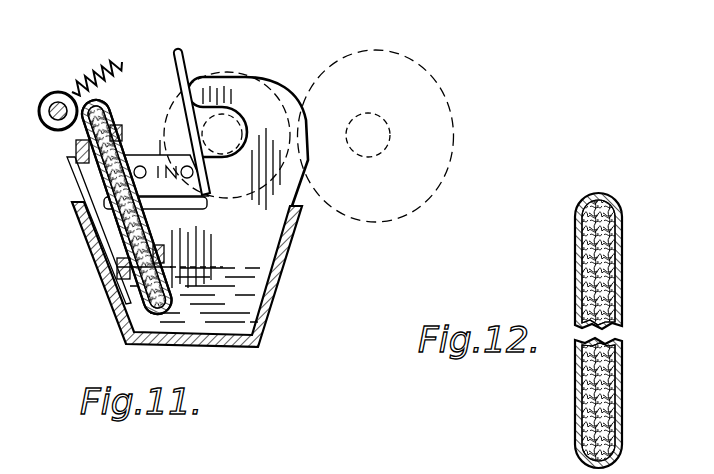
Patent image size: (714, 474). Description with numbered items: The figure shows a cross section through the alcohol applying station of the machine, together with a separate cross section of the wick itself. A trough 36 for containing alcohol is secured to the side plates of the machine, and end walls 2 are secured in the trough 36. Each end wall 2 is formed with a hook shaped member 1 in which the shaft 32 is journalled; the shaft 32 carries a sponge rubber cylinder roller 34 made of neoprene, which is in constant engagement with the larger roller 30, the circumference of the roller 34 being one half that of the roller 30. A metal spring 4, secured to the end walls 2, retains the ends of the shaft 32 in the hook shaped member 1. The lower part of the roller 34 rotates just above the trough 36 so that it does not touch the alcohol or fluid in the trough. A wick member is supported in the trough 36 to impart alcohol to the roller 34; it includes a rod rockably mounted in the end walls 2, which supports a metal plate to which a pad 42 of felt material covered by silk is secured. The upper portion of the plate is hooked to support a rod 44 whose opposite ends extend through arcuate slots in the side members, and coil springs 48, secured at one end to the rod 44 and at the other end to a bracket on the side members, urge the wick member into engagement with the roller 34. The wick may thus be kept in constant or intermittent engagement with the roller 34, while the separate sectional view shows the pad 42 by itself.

In FIG. 11, the hook shaped member 1 is at (214, 76).
In FIG. 11, the end wall 2 is at (257, 228).
In FIG. 11, the metal spring 4 is at (175, 64).
In FIG. 11, the roller 30 is at (366, 222).
In FIG. 11, the shaft 32 is at (266, 88).
In FIG. 11, the sponge rubber cylinder roller 34 is at (242, 113).
In FIG. 11, the trough 36 is at (97, 287).
In FIG. 11, the pad 42 is at (120, 190).
In FIG. 12, the pad 42 is at (620, 292).
In FIG. 11, the rod 44 is at (45, 99).
In FIG. 11, the coil spring 48 is at (100, 62).